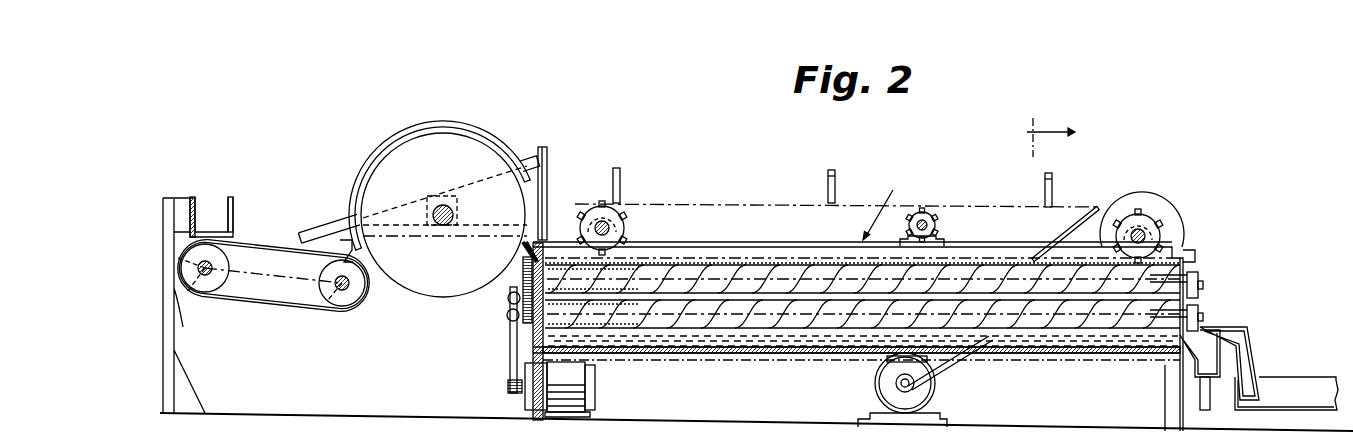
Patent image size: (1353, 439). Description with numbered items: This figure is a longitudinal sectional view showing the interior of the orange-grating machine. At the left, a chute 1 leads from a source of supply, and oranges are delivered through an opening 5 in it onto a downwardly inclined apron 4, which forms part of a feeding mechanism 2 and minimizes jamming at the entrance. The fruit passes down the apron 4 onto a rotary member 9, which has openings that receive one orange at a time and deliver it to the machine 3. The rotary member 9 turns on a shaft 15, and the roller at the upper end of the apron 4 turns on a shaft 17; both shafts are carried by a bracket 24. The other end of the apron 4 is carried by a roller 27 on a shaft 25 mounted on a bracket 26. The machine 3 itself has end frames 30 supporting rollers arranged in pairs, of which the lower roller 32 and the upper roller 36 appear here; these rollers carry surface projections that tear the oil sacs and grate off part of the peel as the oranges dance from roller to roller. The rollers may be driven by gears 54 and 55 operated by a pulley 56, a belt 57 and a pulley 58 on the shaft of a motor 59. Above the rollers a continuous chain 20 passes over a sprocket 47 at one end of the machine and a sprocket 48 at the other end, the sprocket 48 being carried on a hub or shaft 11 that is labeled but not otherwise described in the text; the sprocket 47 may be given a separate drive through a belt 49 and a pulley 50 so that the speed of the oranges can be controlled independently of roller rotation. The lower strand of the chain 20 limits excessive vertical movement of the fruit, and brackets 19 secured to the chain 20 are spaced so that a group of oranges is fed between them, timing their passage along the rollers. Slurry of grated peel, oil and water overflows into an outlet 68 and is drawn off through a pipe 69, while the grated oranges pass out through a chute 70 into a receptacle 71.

The chute 1 is at (233, 200).
The feeding mechanism 2 is at (444, 123).
The machine 3 is at (973, 168).
The apron 4 is at (283, 250).
The opening 5 is at (236, 218).
The rotary member 9 is at (448, 147).
The shaft 11 is at (612, 228).
The shaft 15 is at (440, 225).
The shaft 17 is at (342, 292).
The brackets 19 is at (833, 172).
The chain 20 is at (720, 203).
The bracket 24 is at (331, 229).
The shaft 25 is at (212, 278).
The bracket 26 is at (177, 290).
The roller 27 is at (215, 268).
The end frames 30 is at (532, 333).
The roller 32 is at (751, 320).
The roller 36 is at (757, 262).
The sprocket 47 is at (1146, 222).
The sprocket 48 is at (590, 208).
The belt 49 is at (1074, 226).
The pulley 50 is at (1134, 194).
The gear 54 is at (527, 267).
The gear 55 is at (513, 298).
The pulley 56 is at (512, 314).
The belt 57 is at (512, 356).
The pulley 58 is at (508, 388).
The motor 59 is at (586, 388).
The outlet 68 is at (1200, 352).
The pipe 69 is at (1203, 394).
The chute 70 is at (1250, 364).
The receptacle 71 is at (1313, 392).